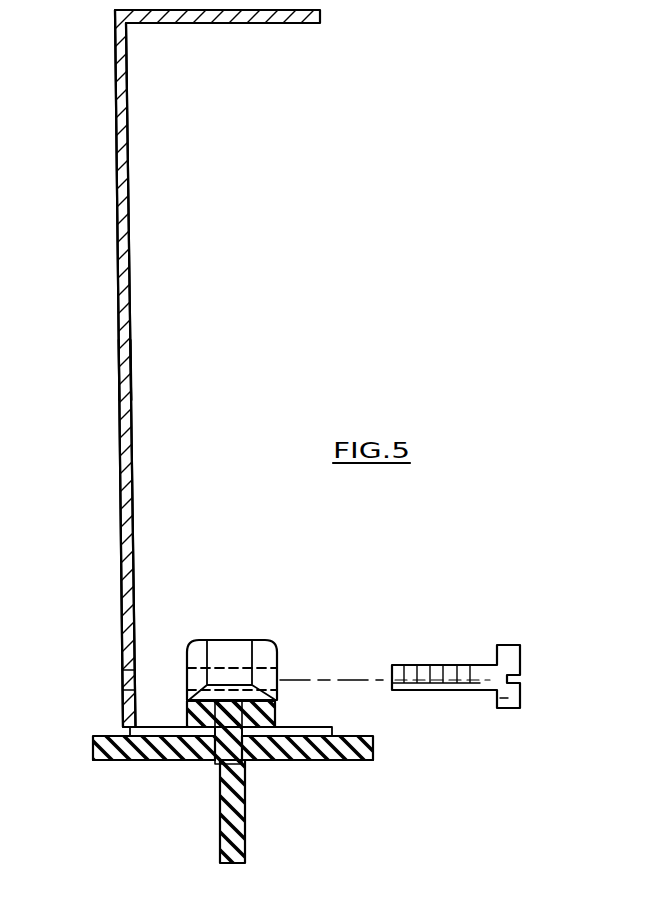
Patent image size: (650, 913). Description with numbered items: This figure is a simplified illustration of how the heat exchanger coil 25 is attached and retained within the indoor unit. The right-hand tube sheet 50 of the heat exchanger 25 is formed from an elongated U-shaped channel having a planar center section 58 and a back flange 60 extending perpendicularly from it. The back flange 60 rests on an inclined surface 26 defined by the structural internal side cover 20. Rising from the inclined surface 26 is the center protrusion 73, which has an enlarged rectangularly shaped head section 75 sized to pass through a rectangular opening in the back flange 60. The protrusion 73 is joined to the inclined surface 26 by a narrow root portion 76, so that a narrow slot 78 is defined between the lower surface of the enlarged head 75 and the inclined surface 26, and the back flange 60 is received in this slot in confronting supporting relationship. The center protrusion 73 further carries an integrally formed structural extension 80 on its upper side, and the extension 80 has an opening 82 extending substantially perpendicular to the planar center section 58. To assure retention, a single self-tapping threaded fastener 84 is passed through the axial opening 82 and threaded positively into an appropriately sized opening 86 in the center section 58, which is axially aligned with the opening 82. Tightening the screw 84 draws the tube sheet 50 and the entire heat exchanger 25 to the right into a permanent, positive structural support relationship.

The structural internal side cover 20 is at (210, 856).
The heat exchanger coil 25 is at (93, 371).
The inclined surface 26 is at (266, 761).
The right-hand tube sheet 50 is at (172, 368).
The planar center section 58 is at (118, 291).
The back flange 60 is at (318, 725).
The center protrusion 73 is at (236, 673).
The enlarged head section 75 is at (188, 719).
The narrow root portion 76 is at (258, 762).
The narrow slot 78 is at (192, 767).
The structural extension 80 is at (196, 641).
The opening 82 is at (277, 670).
The self-tapping threaded fastener 84 is at (515, 645).
The opening 86 is at (124, 681).